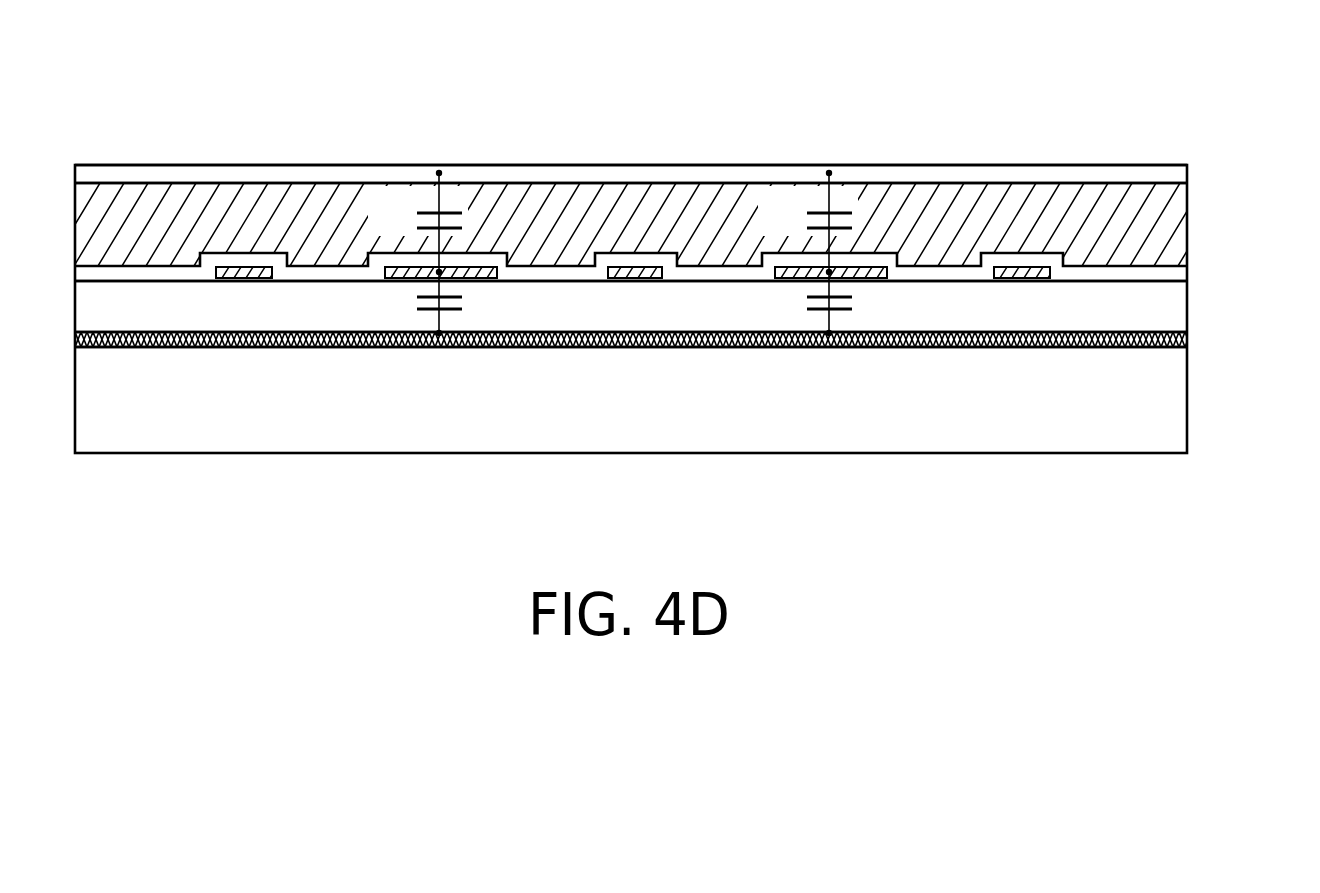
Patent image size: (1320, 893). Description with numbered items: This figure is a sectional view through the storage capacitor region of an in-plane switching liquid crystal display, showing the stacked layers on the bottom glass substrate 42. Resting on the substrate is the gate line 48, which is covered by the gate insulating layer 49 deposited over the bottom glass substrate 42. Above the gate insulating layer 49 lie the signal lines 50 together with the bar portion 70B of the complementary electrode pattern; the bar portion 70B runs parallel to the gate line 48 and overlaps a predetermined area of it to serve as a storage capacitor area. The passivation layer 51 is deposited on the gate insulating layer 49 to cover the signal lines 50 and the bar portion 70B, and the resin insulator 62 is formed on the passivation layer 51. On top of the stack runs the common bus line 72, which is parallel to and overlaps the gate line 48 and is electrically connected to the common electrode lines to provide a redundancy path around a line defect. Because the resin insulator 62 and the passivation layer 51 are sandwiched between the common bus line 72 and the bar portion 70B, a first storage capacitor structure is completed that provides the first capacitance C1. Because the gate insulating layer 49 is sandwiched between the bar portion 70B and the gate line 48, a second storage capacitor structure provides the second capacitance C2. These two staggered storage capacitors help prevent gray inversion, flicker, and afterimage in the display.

The bottom glass substrate 42 is at (1157, 403).
The gate line 48 is at (1187, 337).
The gate insulating layer 49 is at (1157, 304).
The signal line 50 is at (241, 268).
The passivation layer 51 is at (1157, 272).
The resin insulator 62 is at (1157, 225).
The bar portion 70B is at (476, 268).
The common bus line 72 is at (1157, 172).
The first capacitance C1 is at (612, 221).
The second capacitance C2 is at (612, 302).